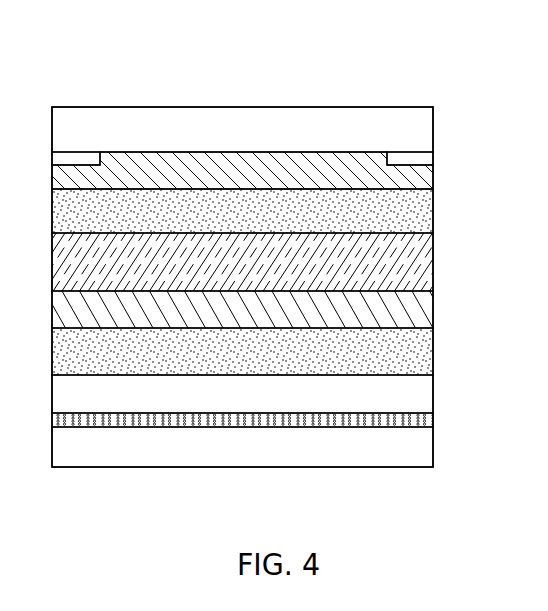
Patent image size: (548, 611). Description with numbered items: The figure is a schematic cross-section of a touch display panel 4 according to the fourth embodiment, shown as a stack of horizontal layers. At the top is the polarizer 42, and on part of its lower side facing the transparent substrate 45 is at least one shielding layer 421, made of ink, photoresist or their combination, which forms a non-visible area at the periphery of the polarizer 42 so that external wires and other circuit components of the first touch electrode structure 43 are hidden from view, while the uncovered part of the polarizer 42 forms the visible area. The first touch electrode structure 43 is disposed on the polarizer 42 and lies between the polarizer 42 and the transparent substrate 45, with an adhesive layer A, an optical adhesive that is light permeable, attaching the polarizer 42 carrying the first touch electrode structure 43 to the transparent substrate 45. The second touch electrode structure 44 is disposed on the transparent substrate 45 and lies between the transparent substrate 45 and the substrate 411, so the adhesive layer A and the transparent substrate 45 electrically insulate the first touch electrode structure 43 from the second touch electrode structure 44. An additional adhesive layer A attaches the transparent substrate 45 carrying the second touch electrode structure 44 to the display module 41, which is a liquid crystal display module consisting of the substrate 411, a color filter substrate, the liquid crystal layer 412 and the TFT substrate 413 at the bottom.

The touch display panel 4 is at (90, 60).
The display module 41 is at (500, 382).
The substrate 411 is at (418, 393).
The liquid crystal layer 412 is at (420, 420).
The TFT substrate 413 is at (418, 449).
The polarizer 42 is at (415, 127).
The shielding layer 421 is at (423, 160).
The first touch electrode structure 43 is at (427, 178).
The second touch electrode structure 44 is at (422, 310).
The transparent substrate 45 is at (417, 261).
The adhesive layer A is at (423, 215).